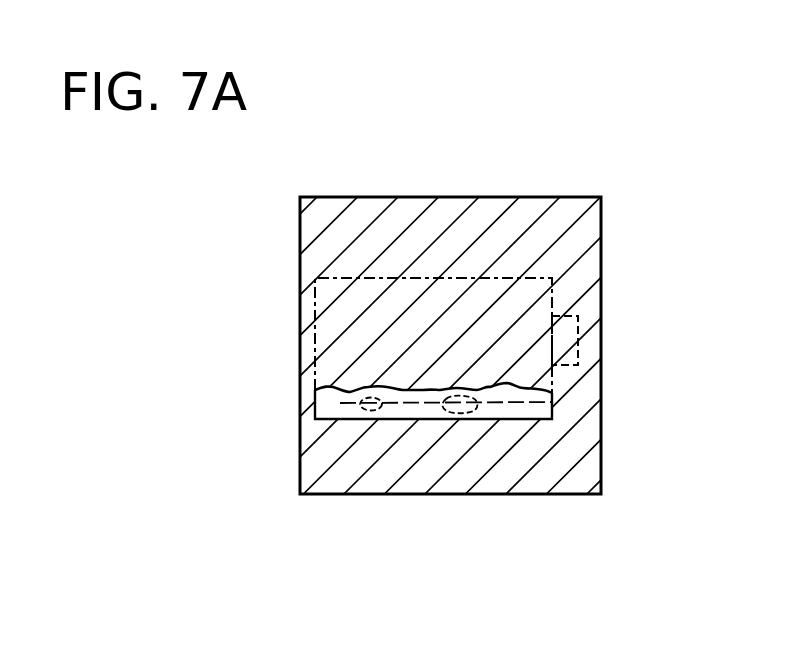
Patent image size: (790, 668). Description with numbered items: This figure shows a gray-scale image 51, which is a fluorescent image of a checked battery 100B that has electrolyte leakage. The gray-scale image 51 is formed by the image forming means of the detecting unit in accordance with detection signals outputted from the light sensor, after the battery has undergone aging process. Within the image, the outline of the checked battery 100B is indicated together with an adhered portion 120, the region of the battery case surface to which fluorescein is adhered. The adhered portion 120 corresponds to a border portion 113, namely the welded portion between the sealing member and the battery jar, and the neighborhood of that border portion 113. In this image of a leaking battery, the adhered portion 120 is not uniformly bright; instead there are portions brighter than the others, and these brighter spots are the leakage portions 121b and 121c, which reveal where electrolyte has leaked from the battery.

The gray-scale image 51 is at (601, 235).
The checked battery 100B is at (297, 359).
The border portion 113 is at (552, 402).
The adhered portion 120 is at (338, 410).
The leakage portion 121b is at (377, 409).
The leakage portion 121c is at (464, 410).